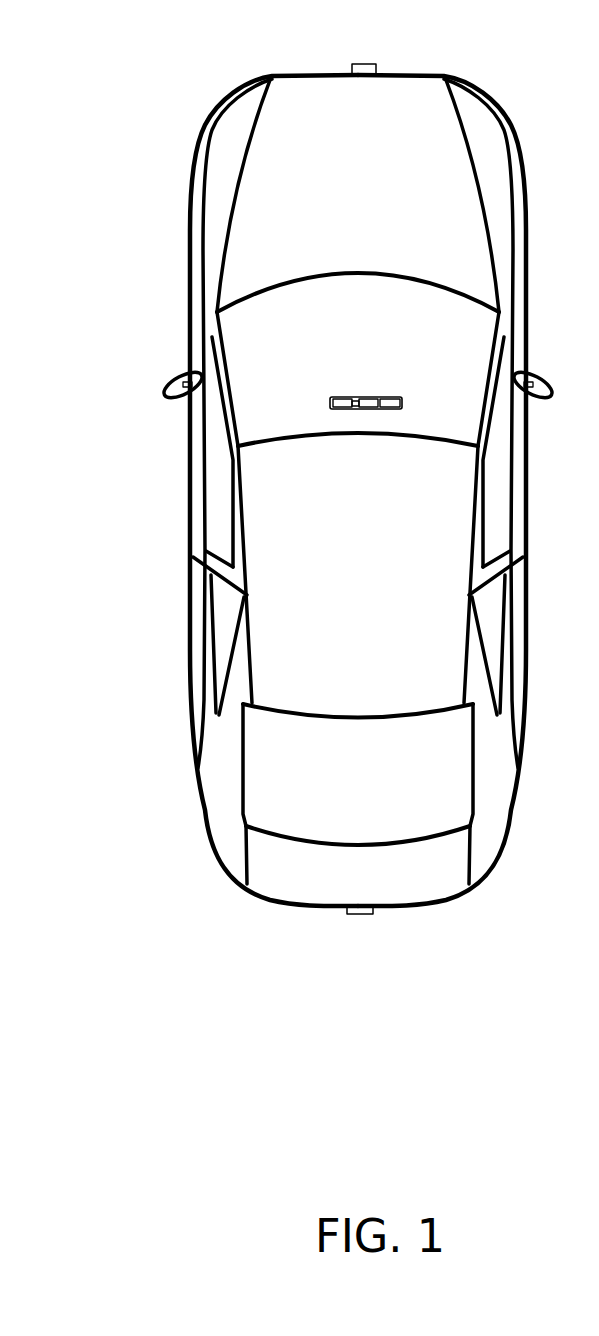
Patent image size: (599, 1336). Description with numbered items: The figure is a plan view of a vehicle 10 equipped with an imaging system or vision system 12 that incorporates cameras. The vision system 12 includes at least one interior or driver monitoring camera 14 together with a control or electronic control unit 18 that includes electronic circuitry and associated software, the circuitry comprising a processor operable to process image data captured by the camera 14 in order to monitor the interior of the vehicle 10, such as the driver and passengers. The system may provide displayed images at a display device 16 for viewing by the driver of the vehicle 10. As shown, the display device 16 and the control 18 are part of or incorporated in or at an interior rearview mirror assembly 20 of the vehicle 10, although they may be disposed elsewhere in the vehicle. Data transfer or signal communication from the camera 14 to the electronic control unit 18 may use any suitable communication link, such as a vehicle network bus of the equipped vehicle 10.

The vehicle 10 is at (125, 87).
The vision system 12 is at (147, 443).
The driver monitoring camera 14 is at (393, 397).
The display device 16 is at (343, 397).
The electronic control unit 18 is at (362, 395).
The interior rearview mirror assembly 20 is at (402, 403).